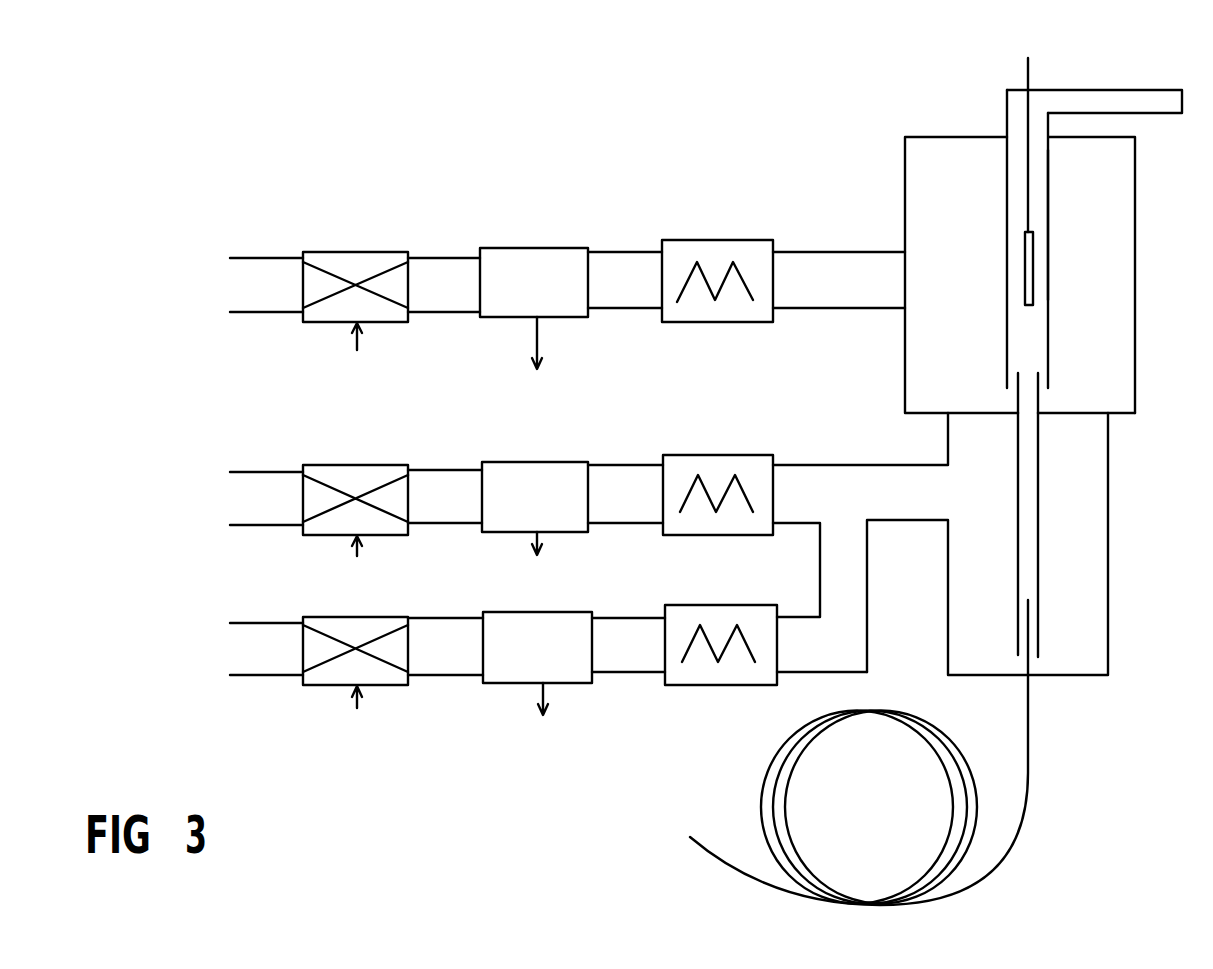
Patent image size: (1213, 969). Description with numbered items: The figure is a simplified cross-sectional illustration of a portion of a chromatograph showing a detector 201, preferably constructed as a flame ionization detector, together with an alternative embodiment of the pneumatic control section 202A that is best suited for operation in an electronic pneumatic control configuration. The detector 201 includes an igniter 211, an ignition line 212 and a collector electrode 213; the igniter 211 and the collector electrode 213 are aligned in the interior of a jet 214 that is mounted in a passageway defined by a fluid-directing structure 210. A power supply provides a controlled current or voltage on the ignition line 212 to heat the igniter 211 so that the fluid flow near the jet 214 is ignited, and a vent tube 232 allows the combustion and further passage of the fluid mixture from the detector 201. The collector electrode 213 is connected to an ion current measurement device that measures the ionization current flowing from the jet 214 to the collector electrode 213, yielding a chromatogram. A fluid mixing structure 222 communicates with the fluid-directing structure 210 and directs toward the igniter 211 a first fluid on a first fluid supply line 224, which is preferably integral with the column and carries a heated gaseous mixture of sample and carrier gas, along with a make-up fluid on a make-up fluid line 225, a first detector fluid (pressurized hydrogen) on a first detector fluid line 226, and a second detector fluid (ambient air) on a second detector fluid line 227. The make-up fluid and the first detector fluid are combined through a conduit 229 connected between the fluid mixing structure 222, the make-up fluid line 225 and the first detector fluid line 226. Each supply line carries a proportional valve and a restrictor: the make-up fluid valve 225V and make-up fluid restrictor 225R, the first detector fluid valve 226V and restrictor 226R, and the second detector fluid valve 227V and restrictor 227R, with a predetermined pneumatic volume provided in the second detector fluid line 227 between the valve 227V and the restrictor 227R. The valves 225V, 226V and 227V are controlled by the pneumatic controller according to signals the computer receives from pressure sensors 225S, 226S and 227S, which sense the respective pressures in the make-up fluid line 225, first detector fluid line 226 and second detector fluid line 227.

The detector 201 is at (918, 112).
The pneumatic control section 202A is at (529, 215).
The fluid-directing structure 210 is at (1137, 353).
The igniter 211 is at (1025, 280).
The ignition line 212 is at (1026, 72).
The collector electrode 213 is at (1048, 220).
The jet 214 is at (1038, 405).
The fluid mixing structure 222 is at (1108, 610).
The first fluid supply line 224 is at (1030, 775).
The make-up fluid line 225 is at (272, 623).
The make-up fluid valve 225V is at (395, 687).
The sensor 225S is at (515, 612).
The make-up fluid restrictor 225R is at (680, 605).
The first detector fluid line 226 is at (282, 472).
The first detector fluid valve 226V is at (365, 465).
The sensor 226S is at (561, 462).
The first detector fluid restrictor 226R is at (733, 455).
The second detector fluid line 227 is at (277, 257).
The second detector fluid valve 227V is at (345, 252).
The sensor 227S is at (565, 318).
The second detector fluid restrictor 227R is at (735, 322).
The conduit 229 is at (907, 520).
The vent tube 232 is at (1160, 90).